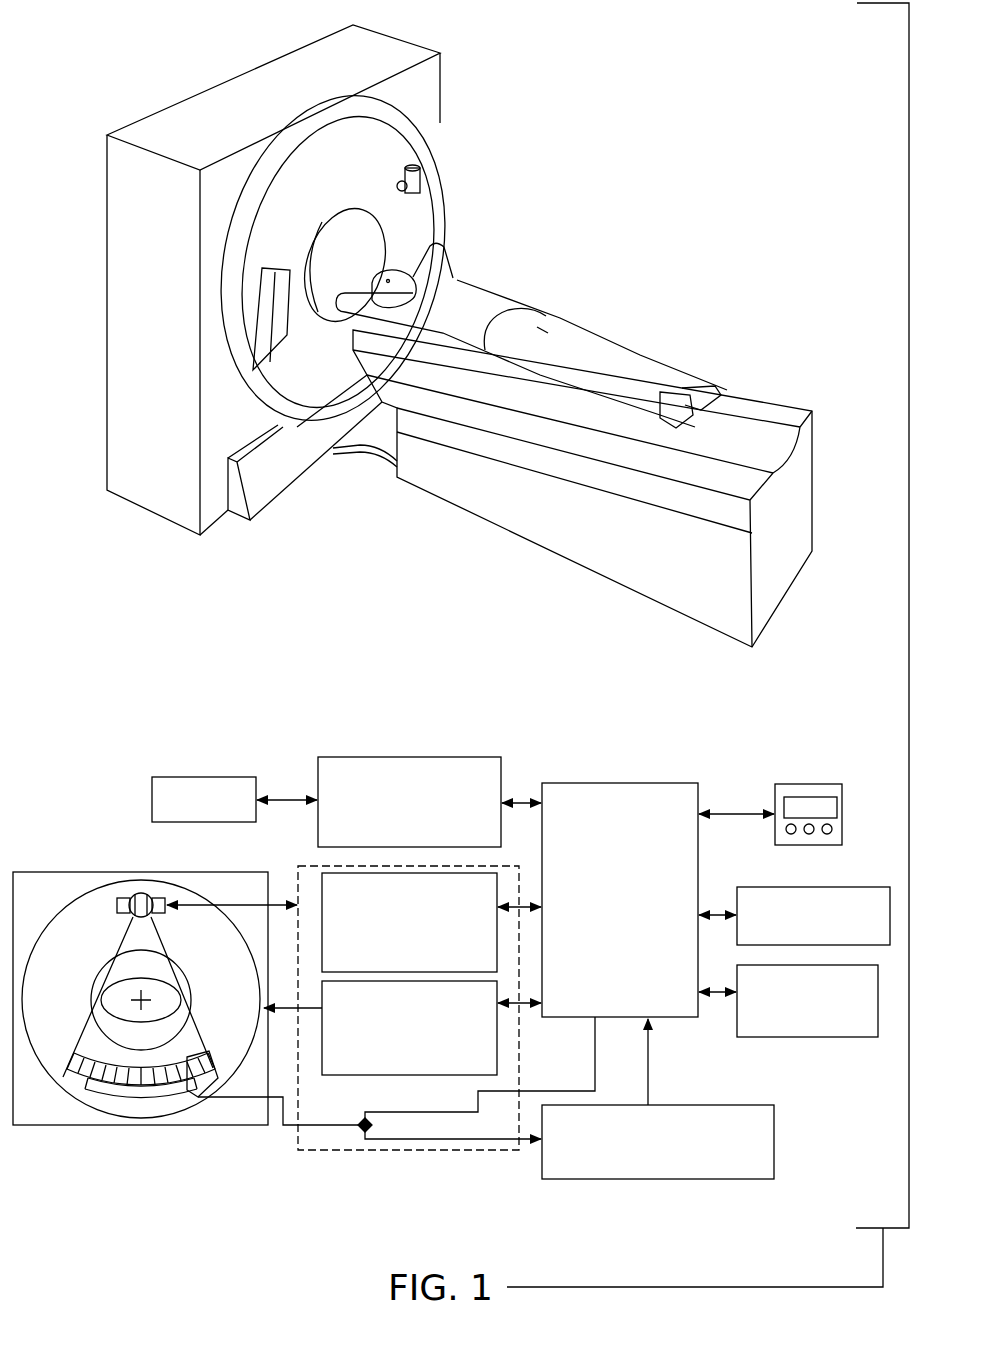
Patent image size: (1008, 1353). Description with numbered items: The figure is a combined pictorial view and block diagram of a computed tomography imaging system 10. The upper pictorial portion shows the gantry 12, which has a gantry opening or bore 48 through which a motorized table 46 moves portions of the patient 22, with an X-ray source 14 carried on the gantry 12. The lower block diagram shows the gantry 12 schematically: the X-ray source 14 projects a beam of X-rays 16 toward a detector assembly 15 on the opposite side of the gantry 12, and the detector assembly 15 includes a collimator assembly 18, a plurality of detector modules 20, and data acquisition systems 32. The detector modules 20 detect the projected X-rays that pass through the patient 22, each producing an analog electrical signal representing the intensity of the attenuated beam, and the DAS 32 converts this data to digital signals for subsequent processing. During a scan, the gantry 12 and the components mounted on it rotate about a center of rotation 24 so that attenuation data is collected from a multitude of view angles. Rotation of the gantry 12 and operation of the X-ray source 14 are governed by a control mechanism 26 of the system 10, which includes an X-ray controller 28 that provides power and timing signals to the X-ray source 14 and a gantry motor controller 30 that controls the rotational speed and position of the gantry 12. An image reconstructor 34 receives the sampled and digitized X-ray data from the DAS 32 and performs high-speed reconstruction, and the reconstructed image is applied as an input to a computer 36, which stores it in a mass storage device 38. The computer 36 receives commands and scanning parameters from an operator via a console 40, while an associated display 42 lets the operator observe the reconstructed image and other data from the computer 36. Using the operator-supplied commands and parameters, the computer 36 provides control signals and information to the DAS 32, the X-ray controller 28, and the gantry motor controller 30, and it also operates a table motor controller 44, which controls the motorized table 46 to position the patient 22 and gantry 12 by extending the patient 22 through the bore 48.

The CT imaging system 10 is at (614, 171).
The gantry 12 is at (392, 158).
The X-ray source 14 is at (423, 176).
The detector assembly 15 is at (62, 1062).
The beam of X-rays 16 is at (87, 1038).
The collimator assembly 18 is at (197, 1053).
The detector modules 20 is at (160, 1086).
The patient 22 is at (467, 297).
The center of rotation 24 is at (147, 997).
The control mechanism 26 is at (314, 1183).
The X-ray controller 28 is at (320, 890).
The gantry motor controller 30 is at (498, 1035).
The data acquisition systems (DAS) 32 is at (97, 1092).
The image reconstructor 34 is at (658, 1182).
The computer 36 is at (620, 782).
The mass storage device 38 is at (848, 1040).
The console 40 is at (868, 886).
The display 42 is at (808, 783).
The table motor controller 44 is at (408, 755).
The motorized table 46 is at (554, 531).
The gantry opening or bore 48 is at (335, 228).